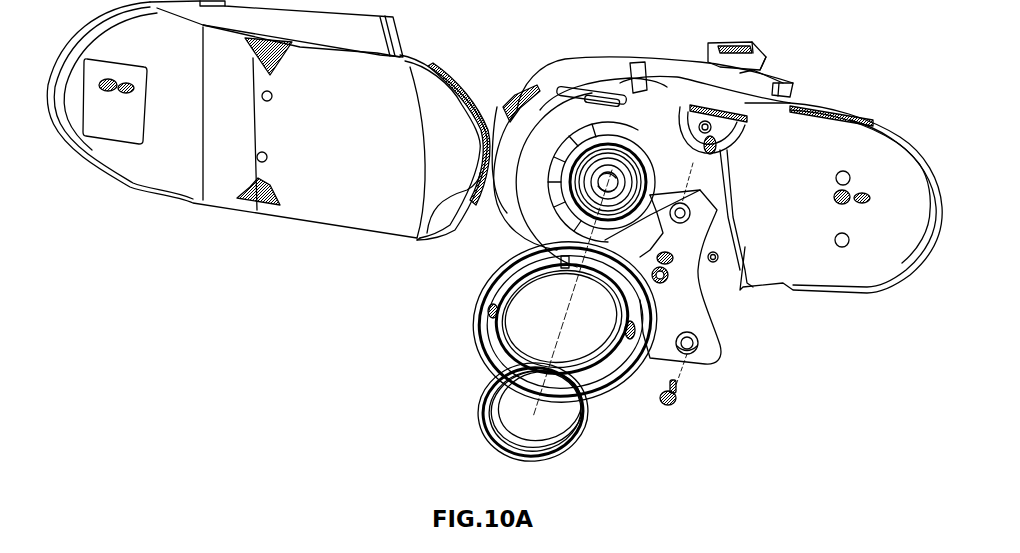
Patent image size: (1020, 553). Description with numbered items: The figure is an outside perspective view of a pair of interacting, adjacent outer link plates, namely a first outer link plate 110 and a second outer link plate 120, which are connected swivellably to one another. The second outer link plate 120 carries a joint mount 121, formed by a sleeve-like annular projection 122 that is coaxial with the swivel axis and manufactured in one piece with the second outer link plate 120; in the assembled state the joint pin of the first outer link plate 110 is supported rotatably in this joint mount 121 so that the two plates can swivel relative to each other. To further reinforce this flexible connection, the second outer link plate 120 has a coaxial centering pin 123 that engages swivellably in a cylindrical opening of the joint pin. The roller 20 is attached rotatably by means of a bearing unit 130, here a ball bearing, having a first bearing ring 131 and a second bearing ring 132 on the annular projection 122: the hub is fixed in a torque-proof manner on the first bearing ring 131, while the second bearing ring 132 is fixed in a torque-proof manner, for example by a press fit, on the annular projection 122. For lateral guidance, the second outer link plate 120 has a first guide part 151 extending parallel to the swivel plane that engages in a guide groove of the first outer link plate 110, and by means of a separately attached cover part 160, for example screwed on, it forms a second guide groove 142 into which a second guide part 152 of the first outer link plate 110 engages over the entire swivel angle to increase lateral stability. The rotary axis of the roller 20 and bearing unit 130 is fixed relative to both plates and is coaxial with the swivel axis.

The first outer link plate 110 is at (305, 205).
The second outer link plate 120 is at (873, 160).
The joint mount 121 is at (557, 133).
The annular projection 122 is at (618, 168).
The centering pin 123 is at (648, 178).
The bearing unit 130 is at (482, 425).
The first bearing ring 131 is at (598, 403).
The second bearing ring 132 is at (493, 443).
The second guide groove 142 is at (780, 87).
The first guide part 151 is at (508, 123).
The second guide part 152 is at (417, 240).
The cover part 160 is at (697, 307).
The roller 20 is at (497, 337).